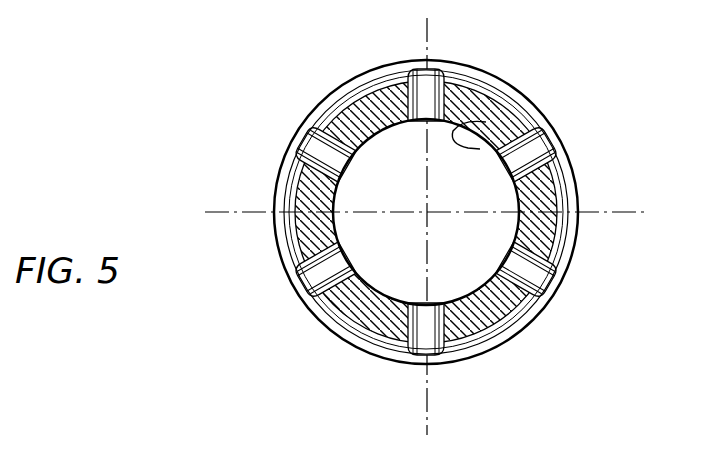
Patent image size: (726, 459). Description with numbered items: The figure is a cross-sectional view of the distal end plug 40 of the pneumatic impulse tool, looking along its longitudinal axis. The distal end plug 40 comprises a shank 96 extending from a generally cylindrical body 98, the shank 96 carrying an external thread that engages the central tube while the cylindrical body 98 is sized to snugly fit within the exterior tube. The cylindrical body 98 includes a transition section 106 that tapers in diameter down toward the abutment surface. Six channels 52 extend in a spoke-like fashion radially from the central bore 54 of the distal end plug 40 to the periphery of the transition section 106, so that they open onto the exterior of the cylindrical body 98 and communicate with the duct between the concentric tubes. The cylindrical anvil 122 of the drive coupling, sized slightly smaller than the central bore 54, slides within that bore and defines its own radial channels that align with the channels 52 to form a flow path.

The distal end plug 40 is at (468, 382).
The channels 52 is at (327, 143).
The central bore 54 is at (465, 270).
The shank 96 is at (363, 303).
The cylindrical body 98 is at (547, 300).
The transition section 106 is at (575, 232).
The cylindrical anvil 122 is at (518, 128).